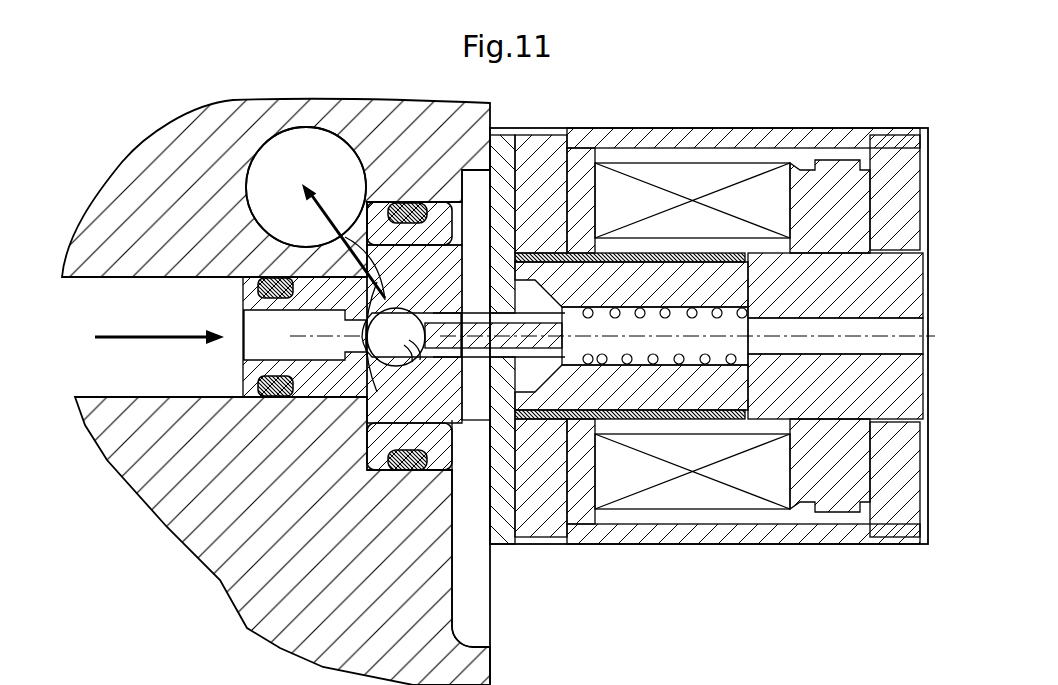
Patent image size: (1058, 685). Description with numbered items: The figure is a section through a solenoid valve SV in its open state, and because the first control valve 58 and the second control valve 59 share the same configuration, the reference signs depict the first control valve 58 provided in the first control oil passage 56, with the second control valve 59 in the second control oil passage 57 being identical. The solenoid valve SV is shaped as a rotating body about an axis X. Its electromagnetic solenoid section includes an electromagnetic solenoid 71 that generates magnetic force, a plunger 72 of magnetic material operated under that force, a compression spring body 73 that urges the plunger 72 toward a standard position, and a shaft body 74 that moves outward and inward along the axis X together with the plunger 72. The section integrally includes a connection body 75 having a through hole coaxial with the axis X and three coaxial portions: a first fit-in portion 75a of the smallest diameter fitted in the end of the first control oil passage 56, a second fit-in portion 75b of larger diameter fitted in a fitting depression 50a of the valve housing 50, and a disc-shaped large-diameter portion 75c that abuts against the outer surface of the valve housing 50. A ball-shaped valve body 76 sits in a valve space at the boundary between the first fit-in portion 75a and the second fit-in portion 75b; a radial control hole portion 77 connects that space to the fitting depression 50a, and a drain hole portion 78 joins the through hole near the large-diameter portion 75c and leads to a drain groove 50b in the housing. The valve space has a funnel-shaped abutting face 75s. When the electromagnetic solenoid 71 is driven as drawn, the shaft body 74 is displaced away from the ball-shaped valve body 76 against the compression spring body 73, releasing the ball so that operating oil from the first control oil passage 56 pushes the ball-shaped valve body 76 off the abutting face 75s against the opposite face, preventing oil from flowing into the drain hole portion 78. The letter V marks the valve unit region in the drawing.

The valve housing 50 is at (252, 623).
The fitting depression 50a is at (433, 210).
The drain groove 50b is at (484, 610).
The first control oil passage 56 is at (296, 165).
The second control oil passage 57 is at (211, 309).
The first control valve 58 is at (700, 548).
The second control valve 59 is at (709, 385).
The electromagnetic solenoid 71 is at (690, 172).
The plunger 72 is at (637, 258).
The compression spring body 73 is at (653, 366).
The shaft body 74 is at (465, 172).
The connection body 75 is at (240, 304).
The first fit-in portion 75a is at (300, 410).
The second fit-in portion 75b is at (372, 471).
The large-diameter portion 75c is at (540, 538).
The abutting face 75s is at (360, 410).
The ball-shaped valve body 76 is at (265, 348).
The control hole portion 77 is at (336, 242).
The drain hole portion 78 is at (516, 422).
The valve V is at (112, 136).
The solenoid valve SV is at (838, 565).
The axis X is at (698, 332).